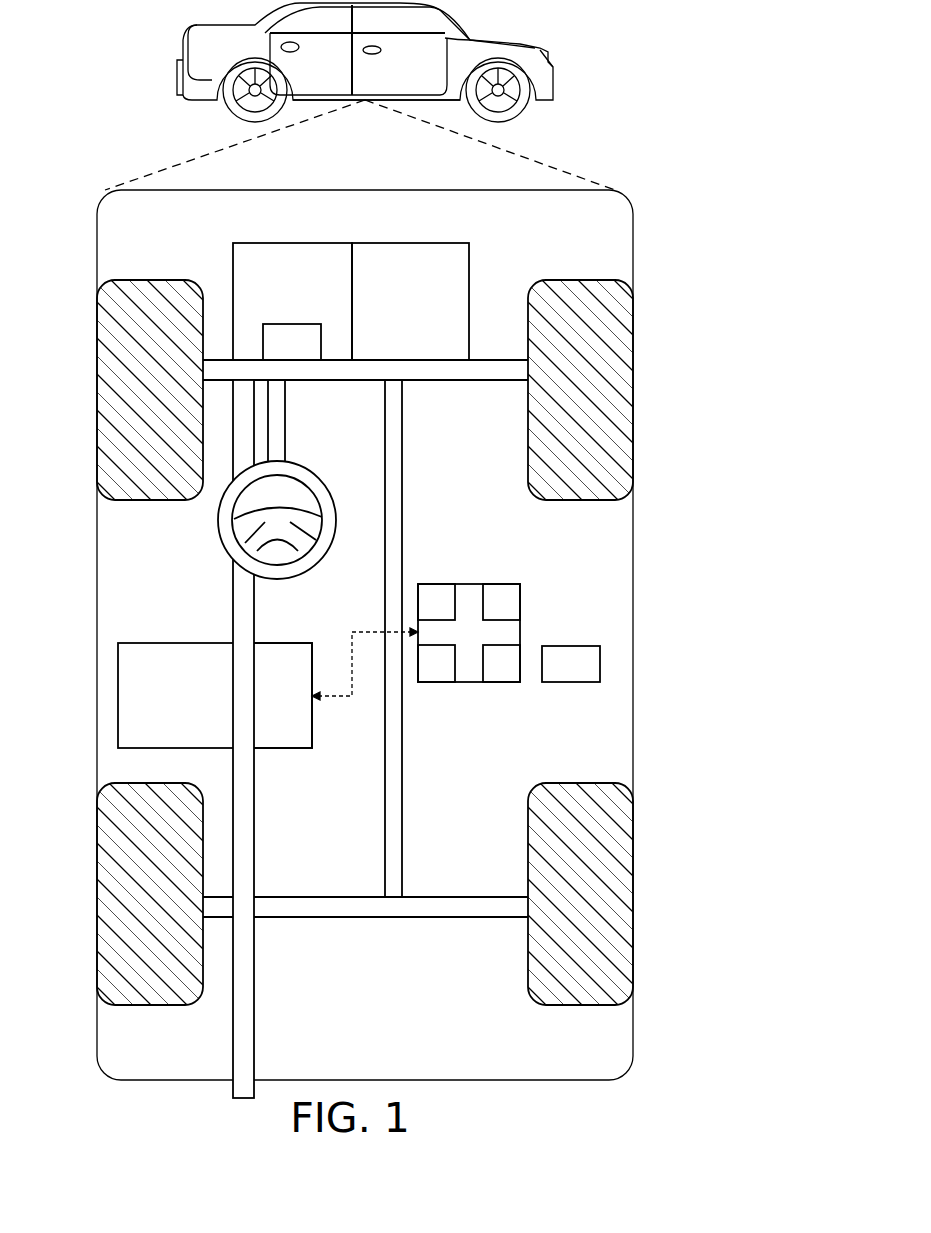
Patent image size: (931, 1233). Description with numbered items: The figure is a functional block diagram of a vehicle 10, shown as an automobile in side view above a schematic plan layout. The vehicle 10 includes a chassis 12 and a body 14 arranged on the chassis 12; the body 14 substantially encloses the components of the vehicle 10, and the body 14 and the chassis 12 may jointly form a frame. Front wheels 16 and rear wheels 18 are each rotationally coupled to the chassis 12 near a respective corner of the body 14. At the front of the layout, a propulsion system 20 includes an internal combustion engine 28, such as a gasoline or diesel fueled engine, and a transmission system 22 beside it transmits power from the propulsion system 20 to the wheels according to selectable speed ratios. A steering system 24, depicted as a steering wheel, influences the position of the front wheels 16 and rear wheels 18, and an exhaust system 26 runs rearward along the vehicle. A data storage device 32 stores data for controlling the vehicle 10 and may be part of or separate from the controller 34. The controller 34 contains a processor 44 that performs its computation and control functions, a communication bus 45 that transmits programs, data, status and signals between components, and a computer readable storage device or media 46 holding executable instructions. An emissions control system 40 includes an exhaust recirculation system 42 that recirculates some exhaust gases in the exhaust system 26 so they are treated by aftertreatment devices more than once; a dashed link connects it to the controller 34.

The vehicle 10 is at (178, 72).
The chassis 12 is at (385, 797).
The body 14 is at (97, 630).
The front wheels 16 is at (149, 292).
The rear wheels 18 is at (151, 1005).
The propulsion system 20 is at (278, 312).
The transmission system 22 is at (395, 310).
The steering system 24 is at (332, 533).
The exhaust system 26 is at (255, 962).
The internal combustion engine 28 is at (278, 353).
The data storage device 32 is at (558, 675).
The controller 34 is at (454, 644).
The emissions control system 40 is at (159, 708).
The exhaust recirculation system 42 is at (267, 708).
The processor 44 is at (487, 613).
The communication bus 45 is at (423, 613).
The computer readable storage device or media 46 is at (487, 675).